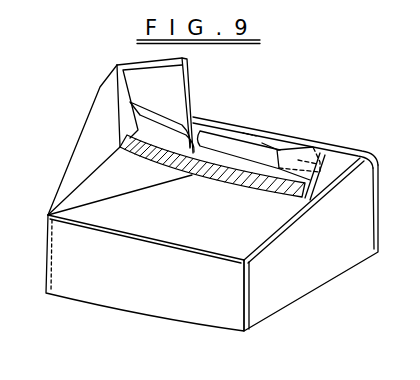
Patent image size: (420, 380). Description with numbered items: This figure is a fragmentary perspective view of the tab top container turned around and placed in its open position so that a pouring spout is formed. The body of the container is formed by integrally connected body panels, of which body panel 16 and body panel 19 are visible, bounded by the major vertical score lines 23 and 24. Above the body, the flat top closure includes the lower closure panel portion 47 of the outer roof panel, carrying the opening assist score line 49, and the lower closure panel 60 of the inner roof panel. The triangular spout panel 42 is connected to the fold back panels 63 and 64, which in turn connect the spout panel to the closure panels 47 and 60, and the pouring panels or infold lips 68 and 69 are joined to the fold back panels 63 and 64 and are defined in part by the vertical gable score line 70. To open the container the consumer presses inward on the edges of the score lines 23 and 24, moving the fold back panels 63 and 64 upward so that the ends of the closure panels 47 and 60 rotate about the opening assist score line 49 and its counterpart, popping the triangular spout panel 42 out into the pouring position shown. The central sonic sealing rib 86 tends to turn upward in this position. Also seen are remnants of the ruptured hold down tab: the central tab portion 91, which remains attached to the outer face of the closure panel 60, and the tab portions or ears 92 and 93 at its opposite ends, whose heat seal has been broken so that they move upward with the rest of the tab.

The body panel 16 is at (311, 244).
The body panel 19 is at (145, 273).
The major vertical score line 23 is at (102, 163).
The major vertical score line 24 is at (176, 60).
The triangular spout panel 42 is at (128, 100).
The lower closure panel portion 47 is at (213, 226).
The opening assist score line 49 is at (130, 196).
The lower closure panel 60 is at (260, 143).
The fold back panel 63 is at (88, 150).
The fold back panel 64 is at (143, 112).
The pouring panel or infold lip 68 is at (117, 100).
The pouring panel or infold lip 69 is at (177, 65).
The vertical gable score line 70 is at (115, 67).
The central sealing rib 86 is at (289, 195).
The central tab portion 91 is at (313, 142).
The tab portion or ear 92 is at (192, 117).
The tab portion or ear 93 is at (287, 158).